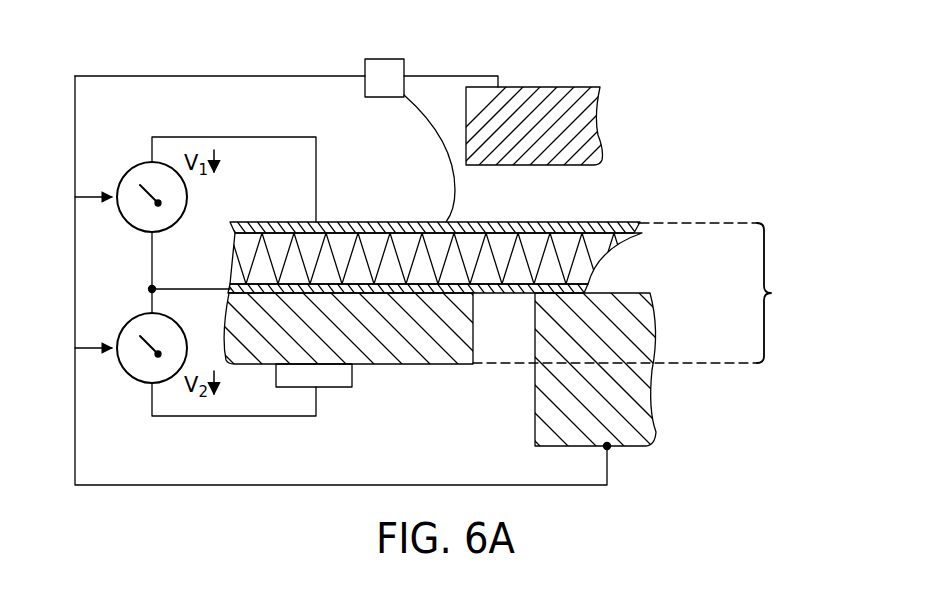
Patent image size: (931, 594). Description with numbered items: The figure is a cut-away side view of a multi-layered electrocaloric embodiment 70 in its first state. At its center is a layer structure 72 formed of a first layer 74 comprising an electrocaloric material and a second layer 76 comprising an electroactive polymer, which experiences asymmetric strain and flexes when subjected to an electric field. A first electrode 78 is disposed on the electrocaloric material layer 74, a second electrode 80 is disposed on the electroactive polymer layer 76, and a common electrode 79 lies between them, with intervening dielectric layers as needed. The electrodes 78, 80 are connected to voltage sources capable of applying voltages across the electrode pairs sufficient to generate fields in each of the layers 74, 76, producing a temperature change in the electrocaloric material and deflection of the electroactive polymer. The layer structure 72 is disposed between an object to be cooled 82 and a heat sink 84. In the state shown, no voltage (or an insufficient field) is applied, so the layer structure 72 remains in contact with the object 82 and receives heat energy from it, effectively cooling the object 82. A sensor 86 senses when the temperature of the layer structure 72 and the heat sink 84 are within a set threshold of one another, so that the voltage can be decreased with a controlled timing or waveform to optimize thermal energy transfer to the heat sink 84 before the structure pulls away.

The embodiment 70 is at (757, 143).
The layer structure 72 is at (772, 294).
The first layer 74 is at (586, 263).
The second layer 76 is at (242, 320).
The first electrode 78 is at (354, 222).
The common electrode 79 is at (588, 289).
The second electrode 80 is at (338, 375).
The object to be cooled 82 is at (650, 410).
The heat sink 84 is at (601, 108).
The sensor 86 is at (406, 66).